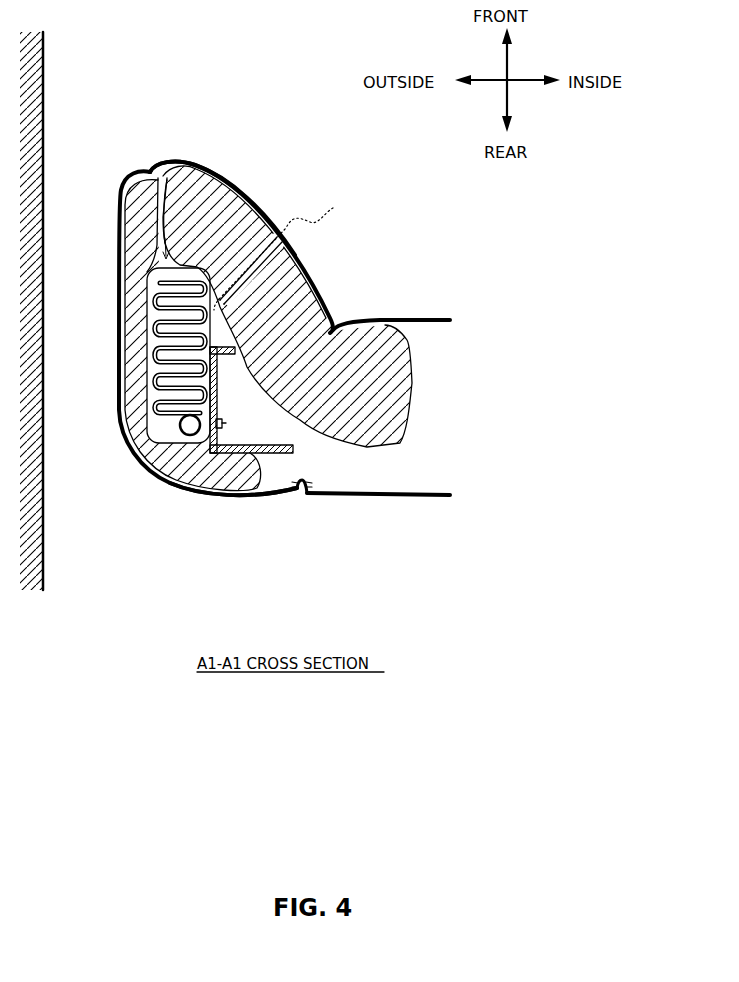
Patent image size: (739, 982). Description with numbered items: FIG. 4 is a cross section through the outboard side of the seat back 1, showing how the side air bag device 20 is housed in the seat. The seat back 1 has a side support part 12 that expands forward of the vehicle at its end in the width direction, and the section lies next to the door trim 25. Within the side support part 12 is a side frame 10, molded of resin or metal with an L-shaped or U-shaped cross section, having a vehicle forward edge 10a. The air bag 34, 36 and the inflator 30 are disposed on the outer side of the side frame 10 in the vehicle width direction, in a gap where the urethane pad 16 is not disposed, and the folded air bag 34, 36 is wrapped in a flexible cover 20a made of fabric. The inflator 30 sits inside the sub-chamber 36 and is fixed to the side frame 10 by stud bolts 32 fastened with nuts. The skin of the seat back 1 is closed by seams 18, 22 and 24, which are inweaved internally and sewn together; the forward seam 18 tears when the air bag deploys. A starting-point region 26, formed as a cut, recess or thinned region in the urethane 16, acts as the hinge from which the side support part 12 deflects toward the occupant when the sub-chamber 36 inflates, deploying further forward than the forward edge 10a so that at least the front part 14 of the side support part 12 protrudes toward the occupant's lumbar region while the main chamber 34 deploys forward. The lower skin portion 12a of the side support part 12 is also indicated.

The seat back 1 is at (437, 457).
The side frame 10 is at (333, 447).
The vehicle forward edge 10a is at (238, 348).
The side support part 12 is at (220, 291).
The skin bottom portion 12a is at (163, 480).
The front part 14 is at (197, 158).
The urethane pad 16 is at (118, 228).
The forward seam 18 is at (150, 173).
The side air bag device 20 is at (228, 187).
The flexible cover 20a is at (124, 298).
The seam 22 is at (348, 323).
The seam 24 is at (300, 493).
The door trim 25 is at (44, 45).
The starting-point region 26 is at (281, 246).
The inflator 30 is at (158, 450).
The stud bolts 32 is at (200, 487).
The main chamber 34 is at (157, 347).
The sub-chamber 36 is at (133, 359).